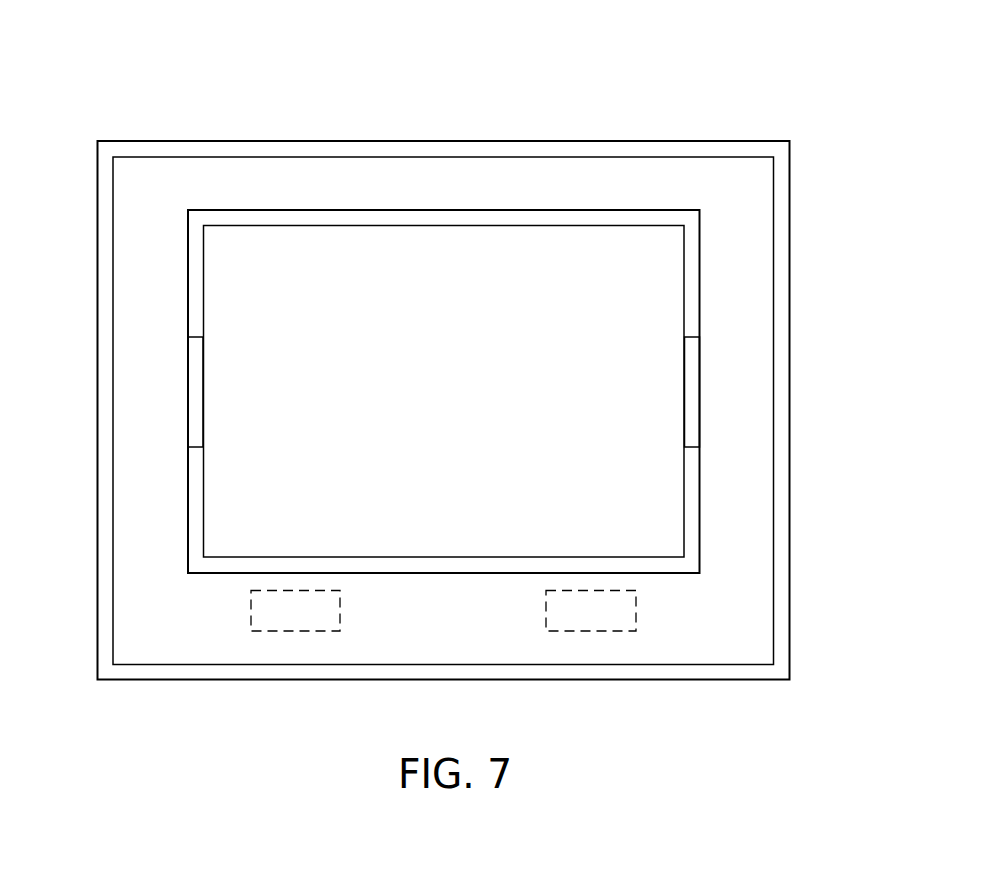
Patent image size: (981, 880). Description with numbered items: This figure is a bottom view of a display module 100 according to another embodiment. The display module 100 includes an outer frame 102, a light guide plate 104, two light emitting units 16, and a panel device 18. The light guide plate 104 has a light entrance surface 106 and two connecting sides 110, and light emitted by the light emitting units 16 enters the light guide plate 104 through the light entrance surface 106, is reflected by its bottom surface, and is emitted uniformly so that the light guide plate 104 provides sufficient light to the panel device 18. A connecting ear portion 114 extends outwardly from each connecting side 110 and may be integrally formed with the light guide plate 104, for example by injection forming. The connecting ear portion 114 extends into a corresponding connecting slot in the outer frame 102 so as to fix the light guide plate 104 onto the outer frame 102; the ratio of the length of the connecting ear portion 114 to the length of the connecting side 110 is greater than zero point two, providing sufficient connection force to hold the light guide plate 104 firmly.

The display module 100 is at (878, 106).
The panel device 18 is at (577, 152).
The outer frame 102 is at (138, 237).
The connecting side 110 is at (203, 540).
The light guide plate 104 is at (453, 403).
The connecting ear portion 114 is at (193, 395).
The light emitting unit 16 is at (295, 625).
The light entrance surface 106 is at (660, 558).